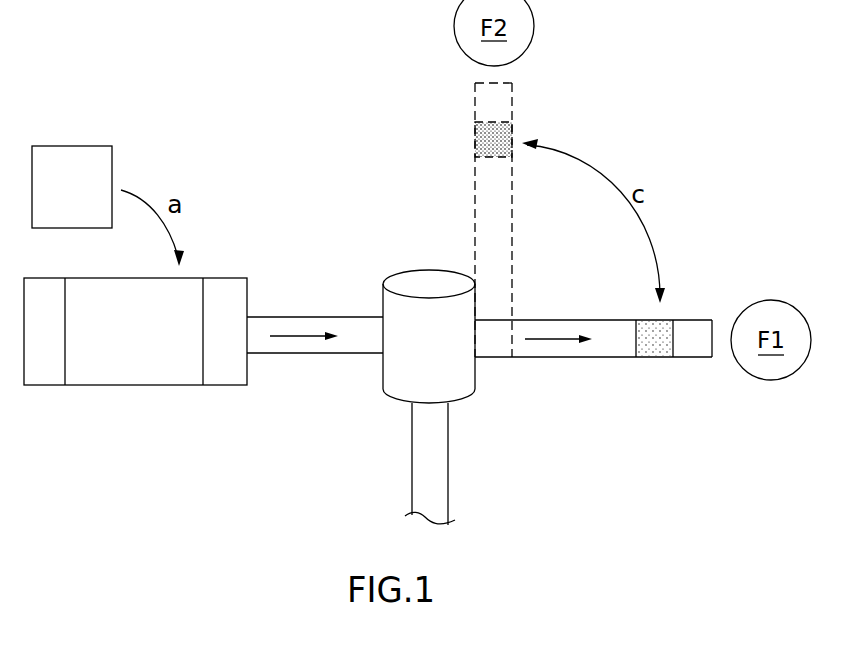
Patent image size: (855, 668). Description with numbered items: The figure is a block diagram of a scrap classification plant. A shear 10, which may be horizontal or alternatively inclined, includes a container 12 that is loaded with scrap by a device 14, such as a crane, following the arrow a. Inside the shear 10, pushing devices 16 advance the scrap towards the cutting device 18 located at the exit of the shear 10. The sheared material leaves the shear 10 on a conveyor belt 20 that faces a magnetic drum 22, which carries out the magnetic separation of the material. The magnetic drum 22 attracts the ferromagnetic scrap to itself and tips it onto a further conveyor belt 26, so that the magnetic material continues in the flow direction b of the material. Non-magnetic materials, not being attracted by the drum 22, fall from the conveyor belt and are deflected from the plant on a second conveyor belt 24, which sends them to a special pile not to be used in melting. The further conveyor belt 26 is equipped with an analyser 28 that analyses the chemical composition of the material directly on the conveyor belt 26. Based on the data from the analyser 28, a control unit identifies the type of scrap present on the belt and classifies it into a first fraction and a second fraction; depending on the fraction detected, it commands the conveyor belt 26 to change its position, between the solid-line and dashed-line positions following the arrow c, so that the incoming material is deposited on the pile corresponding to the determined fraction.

The shear 10 is at (124, 404).
The container 12 is at (121, 345).
The device 14 is at (58, 200).
The pushing devices 16 is at (31, 345).
The cutting device 18 is at (210, 345).
The conveyor belt 20 is at (288, 325).
The magnetic drum 22 is at (414, 350).
The conveyor belt 24 is at (428, 465).
The conveyor belt 26 is at (574, 350).
The analyser 28 is at (652, 354).